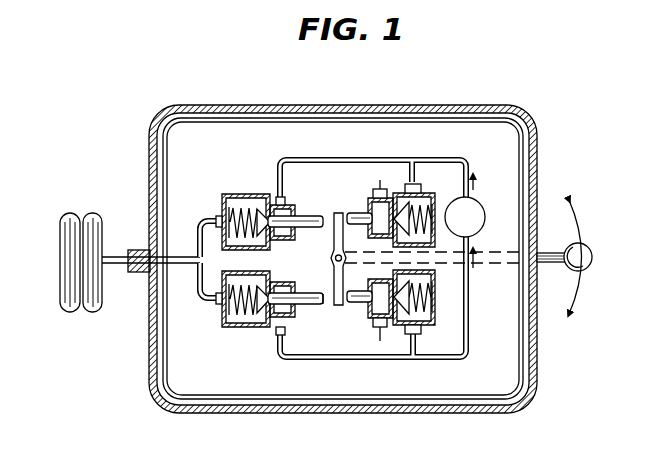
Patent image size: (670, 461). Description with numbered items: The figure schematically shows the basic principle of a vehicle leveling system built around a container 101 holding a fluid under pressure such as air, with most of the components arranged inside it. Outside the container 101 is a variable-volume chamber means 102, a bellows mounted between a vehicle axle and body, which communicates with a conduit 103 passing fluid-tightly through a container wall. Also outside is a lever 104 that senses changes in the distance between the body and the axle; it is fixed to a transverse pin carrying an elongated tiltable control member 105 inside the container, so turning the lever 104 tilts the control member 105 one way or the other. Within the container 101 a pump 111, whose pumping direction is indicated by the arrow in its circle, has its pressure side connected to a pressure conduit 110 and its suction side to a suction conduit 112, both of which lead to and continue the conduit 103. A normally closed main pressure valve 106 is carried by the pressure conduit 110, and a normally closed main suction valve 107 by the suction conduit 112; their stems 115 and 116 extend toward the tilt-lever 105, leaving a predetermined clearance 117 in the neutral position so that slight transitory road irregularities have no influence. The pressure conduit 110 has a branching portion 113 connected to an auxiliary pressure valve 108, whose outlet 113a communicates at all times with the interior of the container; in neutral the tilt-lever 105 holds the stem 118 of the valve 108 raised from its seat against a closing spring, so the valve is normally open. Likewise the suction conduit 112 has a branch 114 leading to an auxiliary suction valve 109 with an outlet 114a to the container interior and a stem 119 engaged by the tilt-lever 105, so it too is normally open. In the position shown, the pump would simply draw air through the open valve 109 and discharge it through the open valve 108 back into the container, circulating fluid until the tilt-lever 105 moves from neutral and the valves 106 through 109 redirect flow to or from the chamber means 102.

The container 101 is at (152, 135).
The variable-volume chamber means 102 is at (61, 283).
The conduit 103 is at (114, 256).
The lever 104 is at (546, 251).
The tiltable control member 105 is at (337, 308).
The main pressure valve 106 is at (230, 194).
The main suction valve 107 is at (240, 331).
The auxiliary pressure valve 108 is at (437, 194).
The auxiliary suction valve 109 is at (437, 311).
The pressure conduit 110 is at (329, 157).
The pump 111 is at (483, 225).
The suction conduit 112 is at (469, 339).
The branching portion 113 is at (414, 168).
The outlet 113a is at (378, 180).
The branch 114 is at (415, 338).
The outlet 114a is at (386, 343).
The stem 115 is at (320, 212).
The stem 116 is at (308, 312).
The clearance 117 is at (327, 296).
The stem 118 is at (351, 212).
The stem 119 is at (356, 304).